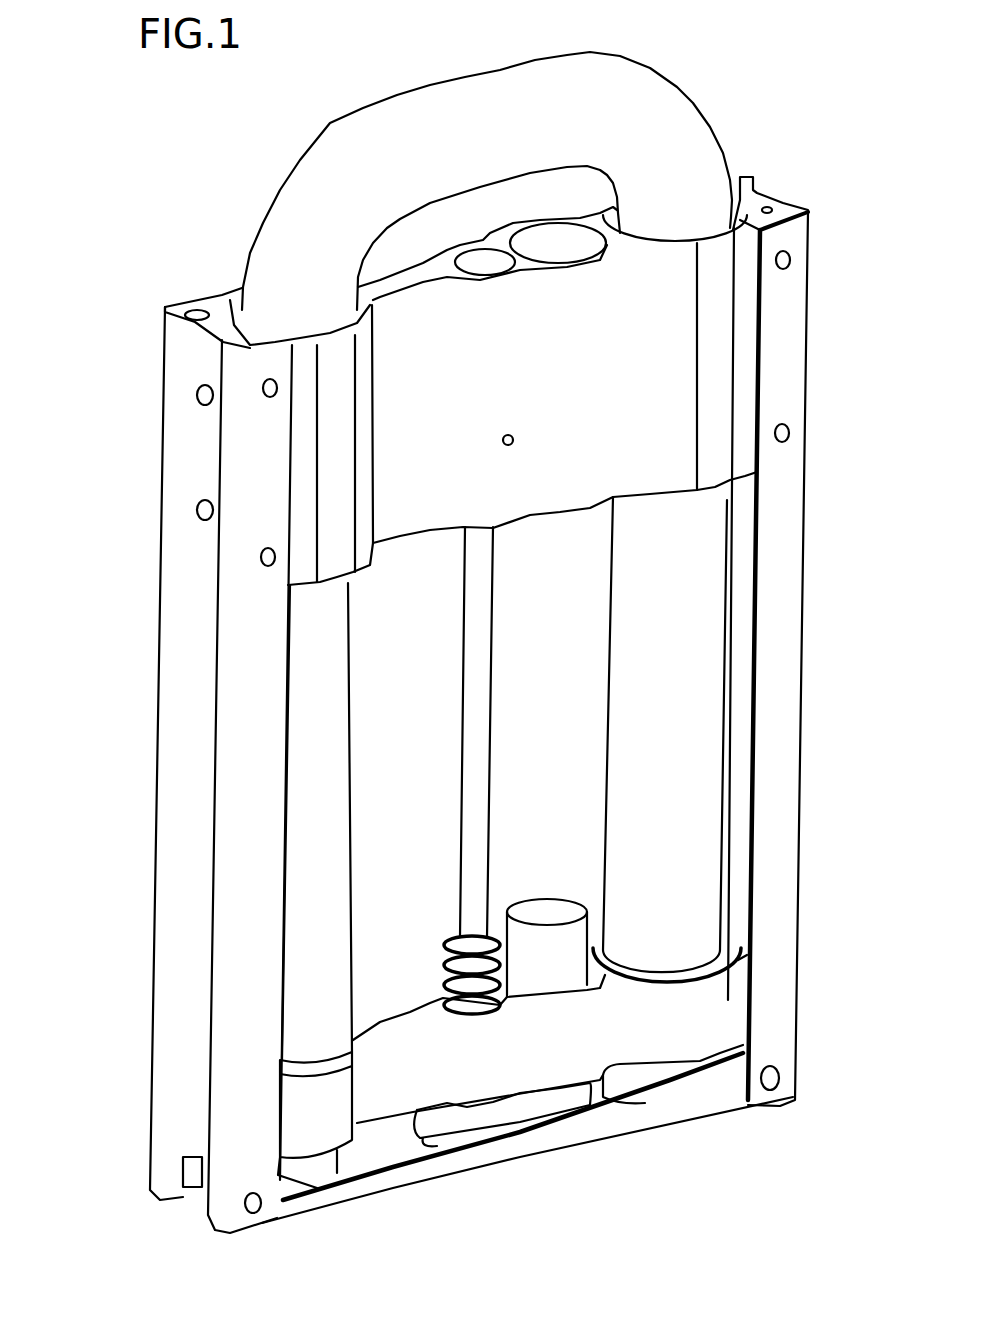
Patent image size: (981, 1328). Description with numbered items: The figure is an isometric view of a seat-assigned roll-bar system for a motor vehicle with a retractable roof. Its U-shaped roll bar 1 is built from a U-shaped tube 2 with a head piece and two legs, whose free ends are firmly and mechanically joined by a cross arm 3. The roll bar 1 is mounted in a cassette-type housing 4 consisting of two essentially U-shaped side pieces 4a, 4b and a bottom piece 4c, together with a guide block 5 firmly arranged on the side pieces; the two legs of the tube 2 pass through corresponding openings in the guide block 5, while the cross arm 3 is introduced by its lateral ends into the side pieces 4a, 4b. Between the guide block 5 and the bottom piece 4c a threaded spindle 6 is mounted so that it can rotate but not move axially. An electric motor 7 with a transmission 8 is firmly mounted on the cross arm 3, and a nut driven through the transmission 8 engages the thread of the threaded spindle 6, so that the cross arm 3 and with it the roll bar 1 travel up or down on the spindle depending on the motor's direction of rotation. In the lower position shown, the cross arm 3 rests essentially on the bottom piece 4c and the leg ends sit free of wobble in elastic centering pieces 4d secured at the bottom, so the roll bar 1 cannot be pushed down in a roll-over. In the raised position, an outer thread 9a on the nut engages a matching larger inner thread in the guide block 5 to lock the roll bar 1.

The roll bar 1 is at (230, 205).
The U-shaped tube 2 is at (620, 100).
The cross arm 3 is at (398, 1117).
The cassette-type housing 4 is at (130, 710).
The side piece 4a is at (192, 742).
The side piece 4b is at (790, 300).
The bottom piece 4c is at (615, 1120).
The centering pieces 4d is at (673, 1083).
The guide block 5 is at (430, 478).
The threaded spindle 6 is at (473, 682).
The electric motor 7 is at (545, 920).
The transmission 8 is at (530, 1107).
The outer thread 9a is at (447, 958).